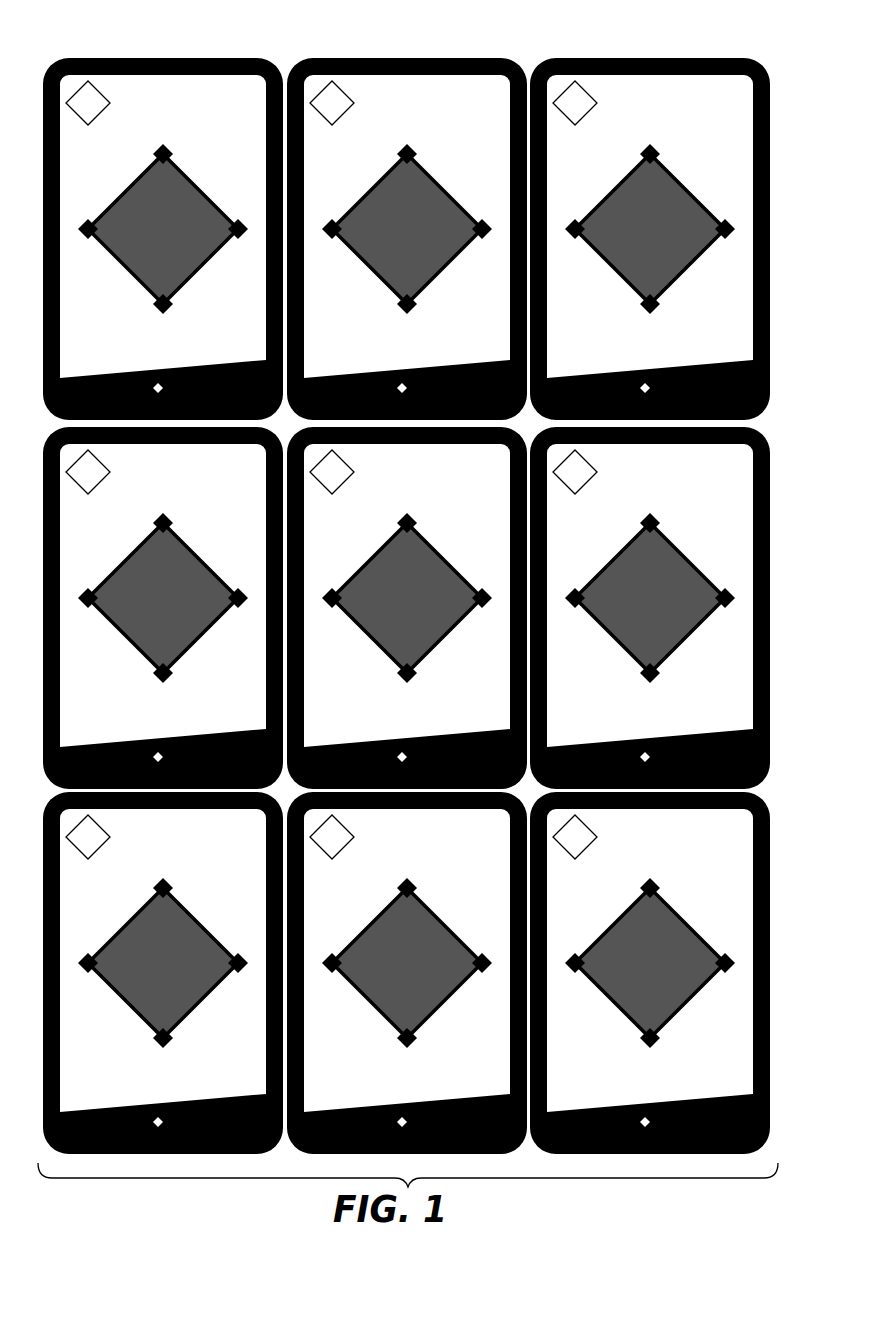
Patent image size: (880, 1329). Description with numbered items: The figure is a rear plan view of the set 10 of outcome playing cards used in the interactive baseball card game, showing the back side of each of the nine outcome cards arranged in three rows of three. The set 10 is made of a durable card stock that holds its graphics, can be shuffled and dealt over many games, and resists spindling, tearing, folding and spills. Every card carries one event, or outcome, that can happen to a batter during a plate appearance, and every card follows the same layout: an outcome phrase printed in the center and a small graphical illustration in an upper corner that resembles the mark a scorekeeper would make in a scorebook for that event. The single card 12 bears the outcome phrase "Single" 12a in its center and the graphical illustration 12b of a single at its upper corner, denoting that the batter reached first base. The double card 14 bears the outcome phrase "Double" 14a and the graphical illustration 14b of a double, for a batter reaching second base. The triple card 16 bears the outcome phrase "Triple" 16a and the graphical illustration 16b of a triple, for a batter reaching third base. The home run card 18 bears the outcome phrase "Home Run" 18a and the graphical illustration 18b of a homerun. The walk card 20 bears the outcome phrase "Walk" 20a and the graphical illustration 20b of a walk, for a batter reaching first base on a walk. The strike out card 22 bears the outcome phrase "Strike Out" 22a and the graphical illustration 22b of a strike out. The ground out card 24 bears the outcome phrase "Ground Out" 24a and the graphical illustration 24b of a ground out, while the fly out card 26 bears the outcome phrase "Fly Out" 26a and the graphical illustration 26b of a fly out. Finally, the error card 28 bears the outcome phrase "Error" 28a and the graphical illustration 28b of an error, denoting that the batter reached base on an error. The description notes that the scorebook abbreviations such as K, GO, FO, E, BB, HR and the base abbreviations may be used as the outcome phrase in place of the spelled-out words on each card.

The set of outcome playing cards 10 is at (106, 40).
The single card 12 is at (650, 608).
The outcome phrase "Single" 12a is at (652, 598).
The graphical illustration of a single 12b is at (606, 472).
The double card 14 is at (163, 973).
The outcome phrase "Double" 14a is at (165, 963).
The graphical illustration of a double 14b is at (119, 837).
The triple card 16 is at (407, 973).
The outcome phrase "Triple" 16a is at (409, 963).
The graphical illustration of a triple 16b is at (363, 837).
The home run card 18 is at (650, 973).
The outcome phrase "Home Run" 18a is at (652, 963).
The graphical illustration of a homerun 18b is at (606, 837).
The walk card 20 is at (407, 608).
The outcome phrase "Walk" 20a is at (409, 598).
The graphical illustration of a walk 20b is at (363, 472).
The strike out card 22 is at (82, 281).
The outcome phrase "Strike Out" 22a is at (155, 126).
The graphical illustration of a strike out 22b is at (119, 103).
The ground out card 24 is at (407, 239).
The outcome phrase "Ground Out" 24a is at (409, 229).
The graphical illustration of a ground out 24b is at (363, 103).
The fly out card 26 is at (650, 239).
The outcome phrase "Fly Out" 26a is at (652, 229).
The graphical illustration of a fly out 26b is at (606, 103).
The error card 28 is at (163, 608).
The outcome phrase "Error" 28a is at (165, 598).
The graphical illustration of an error 28b is at (119, 472).